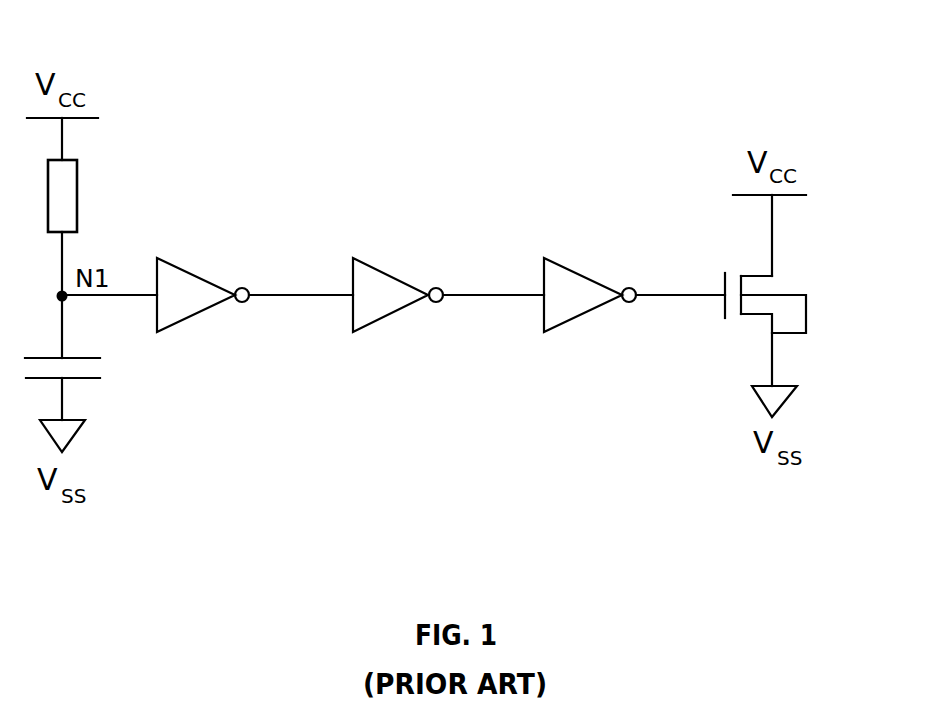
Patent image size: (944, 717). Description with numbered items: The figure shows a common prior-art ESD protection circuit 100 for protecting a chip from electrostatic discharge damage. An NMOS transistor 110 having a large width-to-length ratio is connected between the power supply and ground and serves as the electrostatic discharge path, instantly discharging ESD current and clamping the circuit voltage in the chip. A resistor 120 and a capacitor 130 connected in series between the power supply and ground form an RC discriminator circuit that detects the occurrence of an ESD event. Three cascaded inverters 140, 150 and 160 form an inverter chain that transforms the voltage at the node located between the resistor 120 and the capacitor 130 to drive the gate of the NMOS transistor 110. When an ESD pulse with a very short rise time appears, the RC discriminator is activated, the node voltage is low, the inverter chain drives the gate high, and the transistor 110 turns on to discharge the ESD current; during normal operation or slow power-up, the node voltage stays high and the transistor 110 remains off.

The ESD protection circuit 100 is at (332, 99).
The NMOS transistor 110 is at (793, 277).
The resistor 120 is at (78, 195).
The capacitor 130 is at (96, 380).
The first inverter 140 is at (193, 272).
The second inverter 150 is at (398, 273).
The third inverter 160 is at (592, 273).